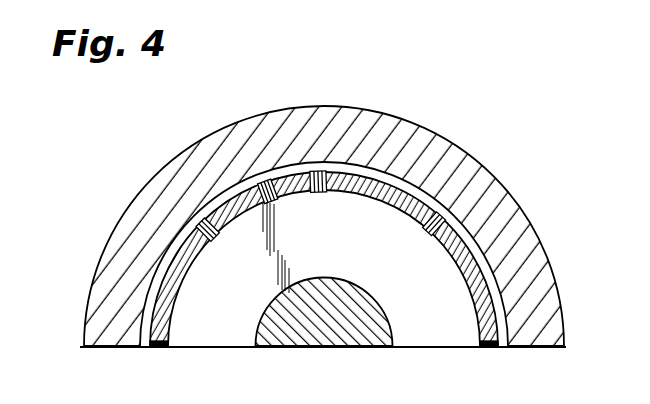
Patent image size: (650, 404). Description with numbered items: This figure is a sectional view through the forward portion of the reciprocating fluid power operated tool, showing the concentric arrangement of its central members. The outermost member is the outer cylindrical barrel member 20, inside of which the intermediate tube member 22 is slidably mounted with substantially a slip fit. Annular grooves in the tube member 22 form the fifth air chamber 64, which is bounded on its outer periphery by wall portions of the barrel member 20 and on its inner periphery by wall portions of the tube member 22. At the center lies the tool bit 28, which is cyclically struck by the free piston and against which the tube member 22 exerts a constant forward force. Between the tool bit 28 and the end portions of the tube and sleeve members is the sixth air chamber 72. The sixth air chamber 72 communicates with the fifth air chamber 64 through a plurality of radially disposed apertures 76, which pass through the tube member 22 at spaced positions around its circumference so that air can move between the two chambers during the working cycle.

The outer cylindrical barrel member 20 is at (324, 220).
The intermediate tube member 22 is at (517, 210).
The fifth air chamber 64 is at (380, 178).
The sixth air chamber 72 is at (336, 251).
The radially disposed apertures 76 is at (210, 237).
The tool bit 28 is at (340, 331).